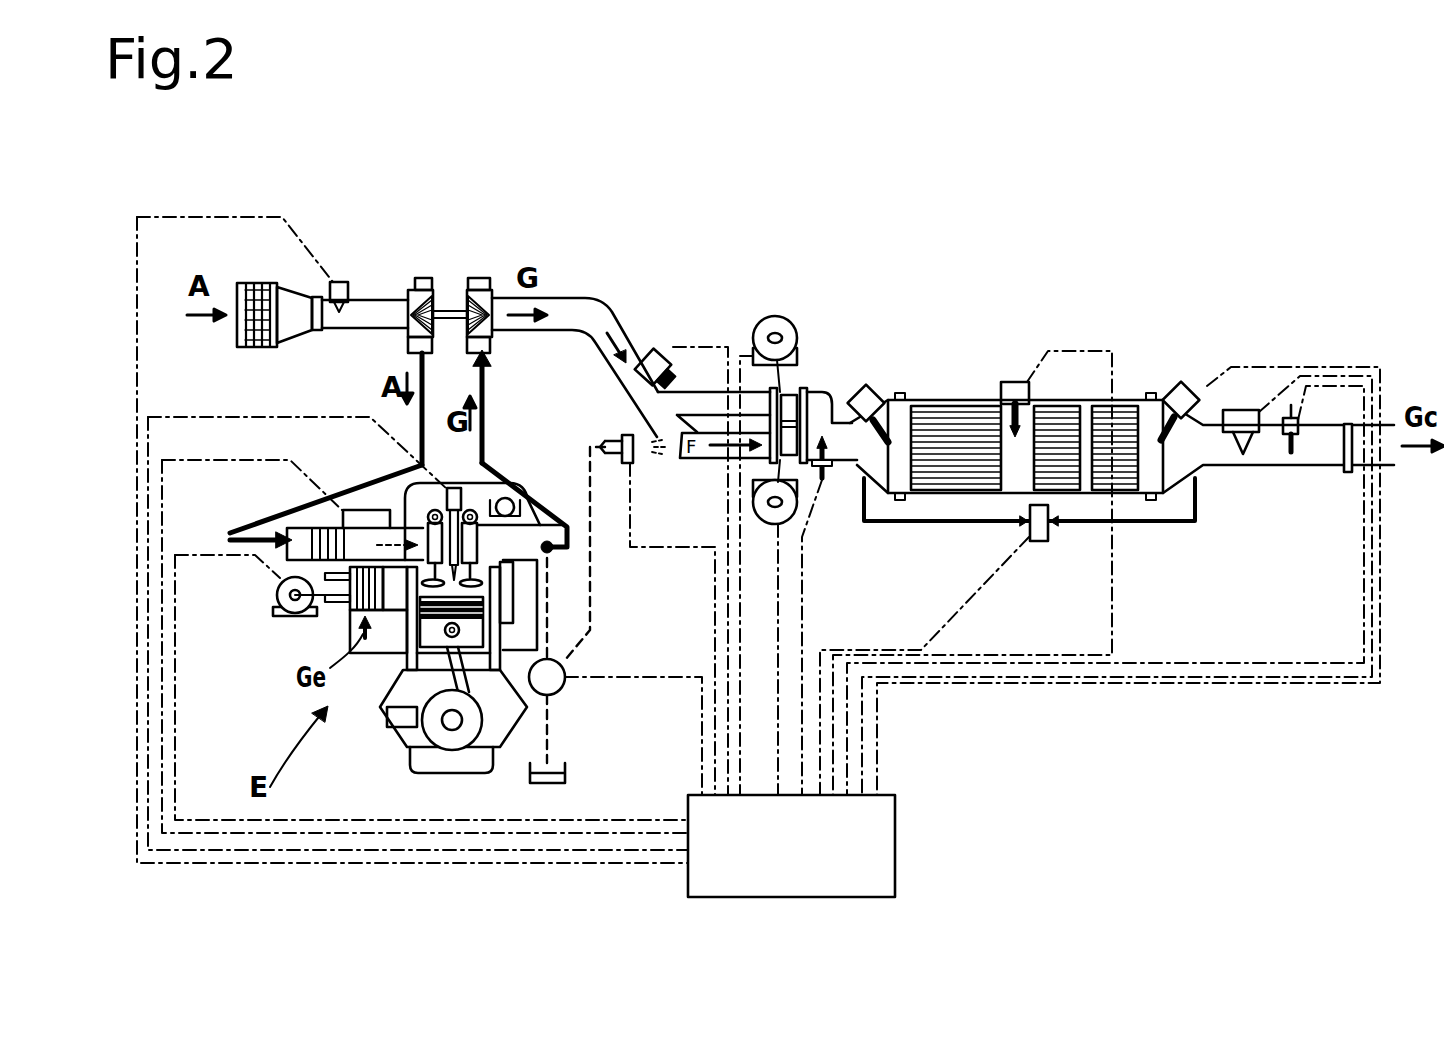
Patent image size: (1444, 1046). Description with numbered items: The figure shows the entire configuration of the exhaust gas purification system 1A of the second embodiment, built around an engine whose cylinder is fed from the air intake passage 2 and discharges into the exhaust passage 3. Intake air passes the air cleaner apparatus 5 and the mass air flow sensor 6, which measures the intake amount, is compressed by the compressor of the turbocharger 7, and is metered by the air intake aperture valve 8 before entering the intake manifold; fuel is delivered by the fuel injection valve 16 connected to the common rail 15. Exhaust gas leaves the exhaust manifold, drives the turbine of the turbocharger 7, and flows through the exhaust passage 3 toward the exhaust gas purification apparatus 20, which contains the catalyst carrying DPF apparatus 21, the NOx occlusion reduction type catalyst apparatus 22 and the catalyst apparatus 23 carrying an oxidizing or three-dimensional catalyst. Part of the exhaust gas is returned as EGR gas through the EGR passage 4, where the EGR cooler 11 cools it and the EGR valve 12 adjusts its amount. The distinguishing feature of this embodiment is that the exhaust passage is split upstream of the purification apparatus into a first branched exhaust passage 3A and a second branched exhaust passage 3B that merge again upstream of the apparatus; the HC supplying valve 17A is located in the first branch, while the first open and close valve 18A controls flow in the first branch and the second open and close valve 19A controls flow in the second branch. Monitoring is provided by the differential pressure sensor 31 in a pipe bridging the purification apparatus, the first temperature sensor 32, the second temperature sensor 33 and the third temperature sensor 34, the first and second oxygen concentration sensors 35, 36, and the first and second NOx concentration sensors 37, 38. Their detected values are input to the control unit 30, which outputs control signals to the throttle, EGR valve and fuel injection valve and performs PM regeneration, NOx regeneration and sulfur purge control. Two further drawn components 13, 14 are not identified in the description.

The exhaust gas purification system 1A is at (985, 313).
The air intake passage 2 is at (407, 290).
The exhaust passage 3 is at (607, 310).
The first branched exhaust passage 3A is at (718, 461).
The second branched exhaust passage 3B is at (700, 392).
The EGR passage 4 is at (373, 577).
The air cleaner apparatus 5 is at (268, 278).
The mass air flow sensor 6 is at (340, 280).
The turbocharger 7 is at (450, 270).
The air intake aperture valve 8 is at (275, 587).
The EGR cooler 11 is at (348, 608).
The EGR valve 12 is at (365, 510).
The fuel tank 13 is at (567, 768).
The fuel pump 14 is at (568, 663).
The common rail 15 is at (513, 502).
The fuel injection valve 16 is at (461, 487).
The HC supplying valve 17A is at (637, 464).
The first open and close valve 18A is at (790, 522).
The second open and close valve 19A is at (786, 318).
The exhaust gas purification apparatus 20 is at (1140, 400).
The catalyst carrying DPF apparatus 21 is at (954, 490).
The NOx occlusion reduction type catalyst apparatus 22 is at (1064, 490).
The catalyst apparatus 23 is at (1124, 490).
The control unit 30 is at (880, 861).
The differential pressure sensor 31 is at (1041, 541).
The first temperature sensor 32 is at (870, 390).
The second temperature sensor 33 is at (1020, 382).
The third temperature sensor 34 is at (1192, 388).
The first oxygen concentration sensor 35 is at (824, 482).
The second oxygen concentration sensor 36 is at (1296, 415).
The first NOx concentration sensor 37 is at (651, 343).
The second NOx concentration sensor 38 is at (1248, 410).